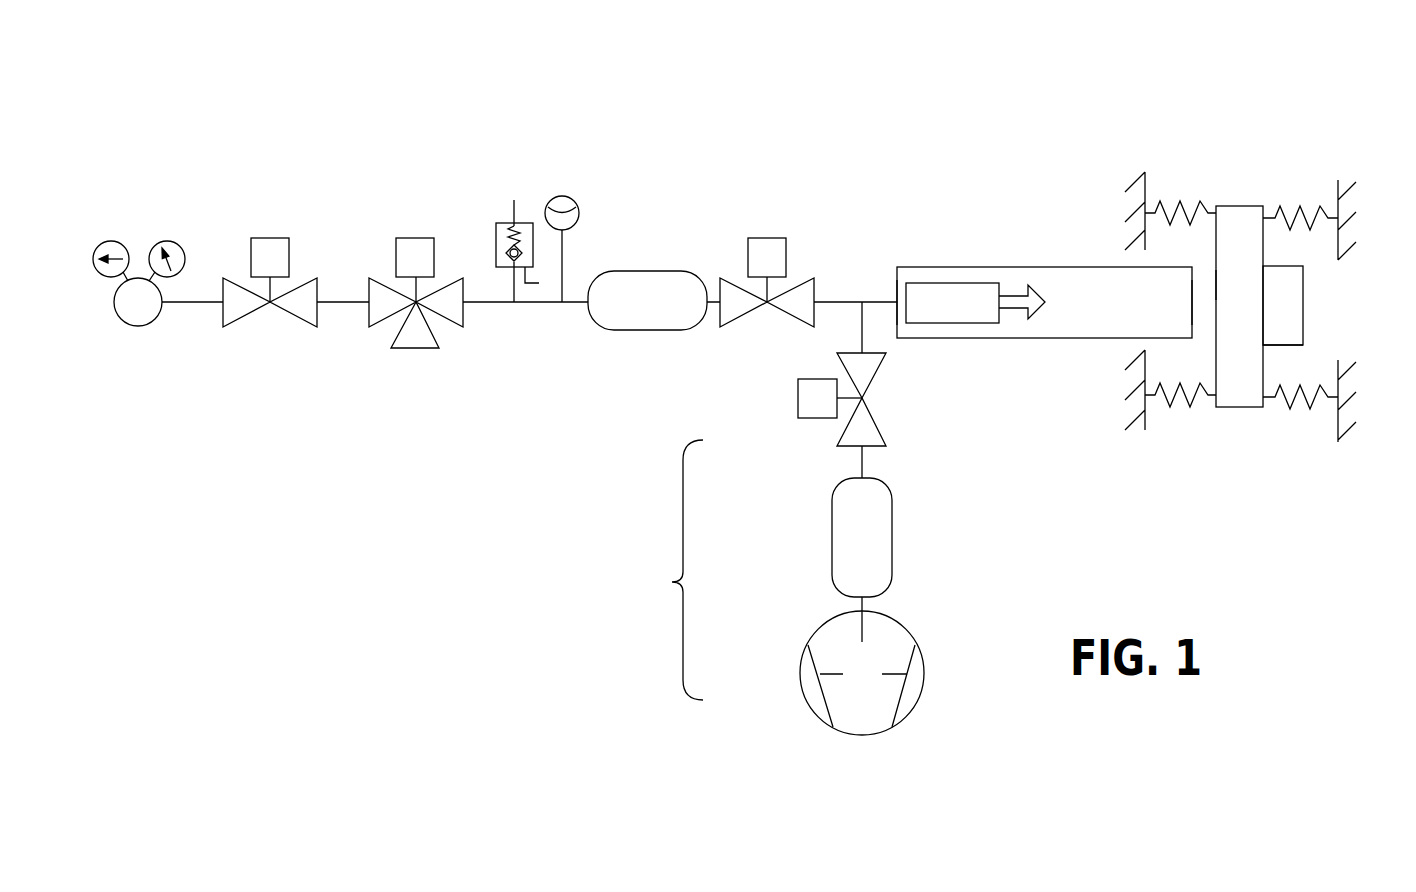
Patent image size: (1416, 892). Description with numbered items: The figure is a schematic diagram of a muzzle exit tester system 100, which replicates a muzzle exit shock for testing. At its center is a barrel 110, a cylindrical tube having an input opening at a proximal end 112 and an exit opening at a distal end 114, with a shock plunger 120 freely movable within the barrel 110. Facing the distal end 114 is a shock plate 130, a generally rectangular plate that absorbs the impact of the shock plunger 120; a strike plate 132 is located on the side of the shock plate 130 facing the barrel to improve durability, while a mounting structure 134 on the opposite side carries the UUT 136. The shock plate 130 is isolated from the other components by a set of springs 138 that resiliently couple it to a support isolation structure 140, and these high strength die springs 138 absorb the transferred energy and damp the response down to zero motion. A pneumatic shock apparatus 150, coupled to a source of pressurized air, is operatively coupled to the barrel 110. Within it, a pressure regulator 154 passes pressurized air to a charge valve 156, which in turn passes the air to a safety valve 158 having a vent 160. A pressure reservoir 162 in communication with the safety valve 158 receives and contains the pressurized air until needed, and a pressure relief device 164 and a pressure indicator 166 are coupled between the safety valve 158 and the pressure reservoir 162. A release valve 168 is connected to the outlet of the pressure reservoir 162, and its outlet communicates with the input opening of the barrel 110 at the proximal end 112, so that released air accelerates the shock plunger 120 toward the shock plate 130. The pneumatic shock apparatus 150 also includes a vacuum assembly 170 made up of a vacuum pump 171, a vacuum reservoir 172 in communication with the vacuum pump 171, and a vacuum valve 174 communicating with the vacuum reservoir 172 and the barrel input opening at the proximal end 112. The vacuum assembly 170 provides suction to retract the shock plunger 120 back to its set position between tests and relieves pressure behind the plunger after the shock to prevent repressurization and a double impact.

The muzzle exit tester system 100 is at (866, 132).
The barrel 110 is at (972, 338).
The proximal end 112 is at (895, 287).
The distal end 114 is at (1192, 310).
The shock plunger 120 is at (957, 283).
The shock plate 130 is at (1243, 407).
The strike plate 132 is at (1215, 287).
The mounting structure 134 is at (1263, 348).
The UUT 136 is at (1303, 317).
The springs 138 is at (1298, 210).
The support isolation structure 140 is at (1147, 193).
The pneumatic shock apparatus 150 is at (540, 482).
The pressure regulator 154 is at (132, 327).
The charge valve 156 is at (302, 320).
The safety valve 158 is at (463, 313).
The vent 160 is at (428, 350).
The pressure reservoir 162 is at (657, 330).
The pressure relief device 164 is at (495, 252).
The pressure indicator 166 is at (578, 216).
The release valve 168 is at (732, 319).
The vacuum assembly 170 is at (672, 582).
The vacuum pump 171 is at (802, 662).
The vacuum reservoir 172 is at (892, 542).
The vacuum valve 174 is at (843, 432).